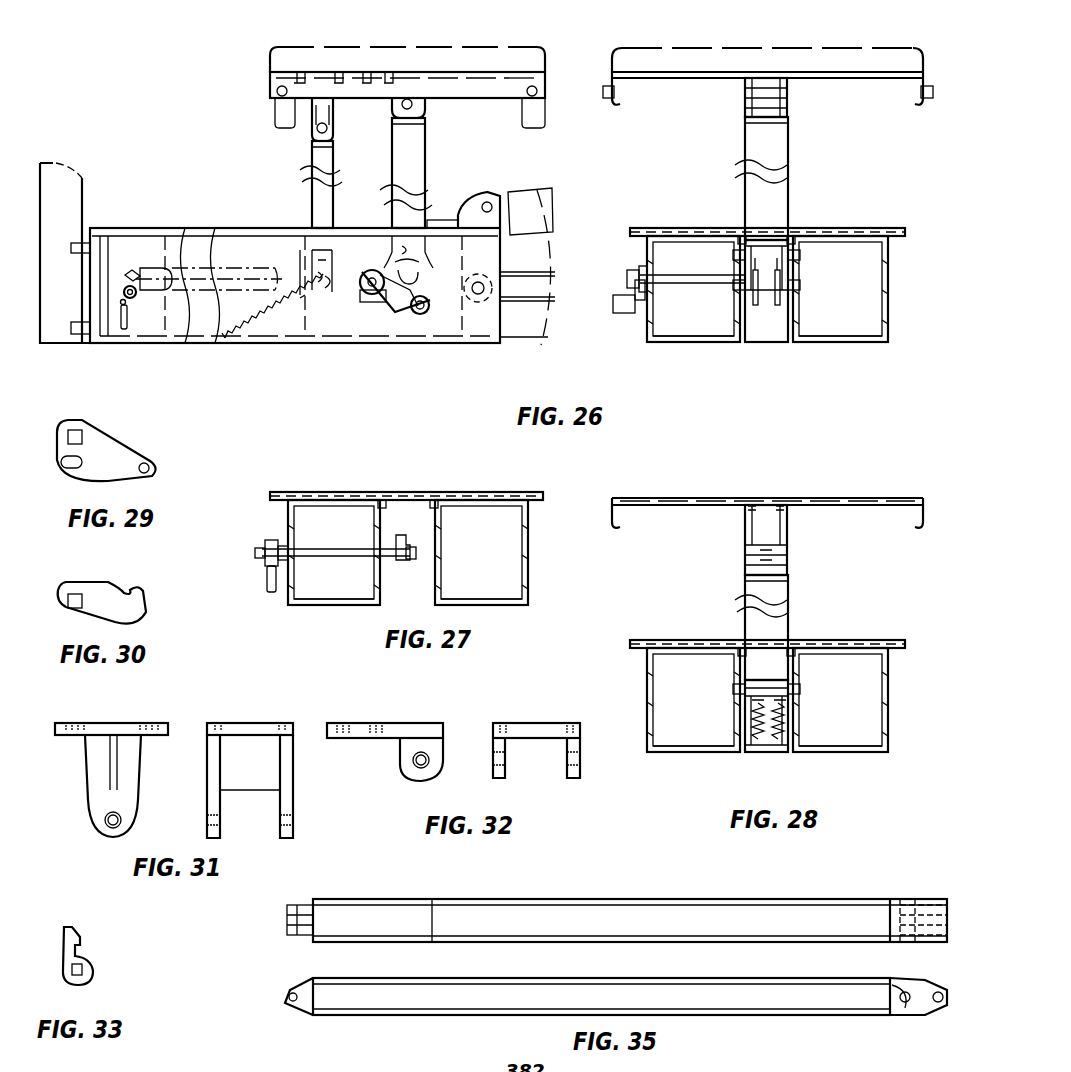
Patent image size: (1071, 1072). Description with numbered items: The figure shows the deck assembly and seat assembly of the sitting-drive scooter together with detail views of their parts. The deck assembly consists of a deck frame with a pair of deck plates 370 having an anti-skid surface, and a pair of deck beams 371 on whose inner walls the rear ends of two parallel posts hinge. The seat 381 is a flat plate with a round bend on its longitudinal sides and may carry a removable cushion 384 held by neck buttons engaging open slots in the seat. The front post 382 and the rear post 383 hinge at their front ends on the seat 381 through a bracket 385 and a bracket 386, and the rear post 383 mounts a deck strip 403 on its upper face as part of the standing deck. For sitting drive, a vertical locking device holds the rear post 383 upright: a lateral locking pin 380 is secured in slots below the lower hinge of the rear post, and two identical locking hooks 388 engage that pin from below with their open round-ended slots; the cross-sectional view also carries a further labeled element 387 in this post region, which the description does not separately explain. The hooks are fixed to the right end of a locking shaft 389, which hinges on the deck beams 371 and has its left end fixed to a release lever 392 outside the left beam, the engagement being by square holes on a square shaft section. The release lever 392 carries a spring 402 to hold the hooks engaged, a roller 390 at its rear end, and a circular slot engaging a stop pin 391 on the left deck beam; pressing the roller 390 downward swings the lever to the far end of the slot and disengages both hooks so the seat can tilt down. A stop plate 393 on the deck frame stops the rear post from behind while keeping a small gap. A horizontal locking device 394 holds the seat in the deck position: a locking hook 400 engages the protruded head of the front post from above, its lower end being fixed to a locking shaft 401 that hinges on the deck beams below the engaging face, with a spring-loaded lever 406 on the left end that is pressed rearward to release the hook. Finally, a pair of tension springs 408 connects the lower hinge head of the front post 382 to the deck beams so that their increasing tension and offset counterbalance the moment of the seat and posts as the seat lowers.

In FIG. 26, the deck plate 370 is at (847, 228).
In FIG. 27, the deck plate 370 is at (490, 492).
In FIG. 28, the deck plate 370 is at (687, 640).
In FIG. 26, the deck beam 371 is at (830, 342).
In FIG. 27, the deck beam 371 is at (480, 605).
In FIG. 28, the deck beam 371 is at (832, 752).
In FIG. 26, the locking pin 380 is at (407, 278).
In FIG. 35, the locking pin 380 is at (920, 905).
In FIG. 26, the seat 381 is at (487, 72).
In FIG. 28, the seat 381 is at (810, 497).
In FIG. 26, the front post 382 is at (310, 200).
In FIG. 28, the front post 382 is at (792, 592).
In FIG. 26, the rear post 383 is at (428, 138).
In FIG. 35, the rear post 383 is at (370, 898).
In FIG. 26, the cushion 384 is at (347, 47).
In FIG. 26, the bracket 385 is at (312, 113).
In FIG. 28, the bracket 385 is at (788, 535).
In FIG. 31, the bracket 385 is at (115, 722).
In FIG. 26, the bracket 386 is at (417, 85).
In FIG. 32, the bracket 386 is at (410, 722).
In FIG. 26, the tube 387 is at (765, 312).
In FIG. 26, the locking hook 388 is at (755, 307).
In FIG. 30, the locking hook 388 is at (95, 583).
In FIG. 26, the locking shaft 389 is at (693, 290).
In FIG. 26, the roller 390 is at (425, 312).
In FIG. 26, the stop pin 391 is at (363, 302).
In FIG. 26, the release lever 392 is at (400, 310).
In FIG. 29, the release lever 392 is at (118, 438).
In FIG. 26, the stop plate 393 is at (445, 215).
In FIG. 27, the horizontal locking device 394 is at (262, 536).
In FIG. 26, the locking hook 400 is at (130, 284).
In FIG. 27, the locking hook 400 is at (400, 532).
In FIG. 33, the locking hook 400 is at (93, 968).
In FIG. 27, the locking shaft 401 is at (330, 560).
In FIG. 26, the spring 402 is at (383, 298).
In FIG. 35, the deck strip 403 is at (430, 920).
In FIG. 26, the lever 406 is at (127, 320).
In FIG. 27, the lever 406 is at (268, 575).
In FIG. 26, the tension spring 408 is at (247, 333).
In FIG. 28, the tension spring 408 is at (753, 740).